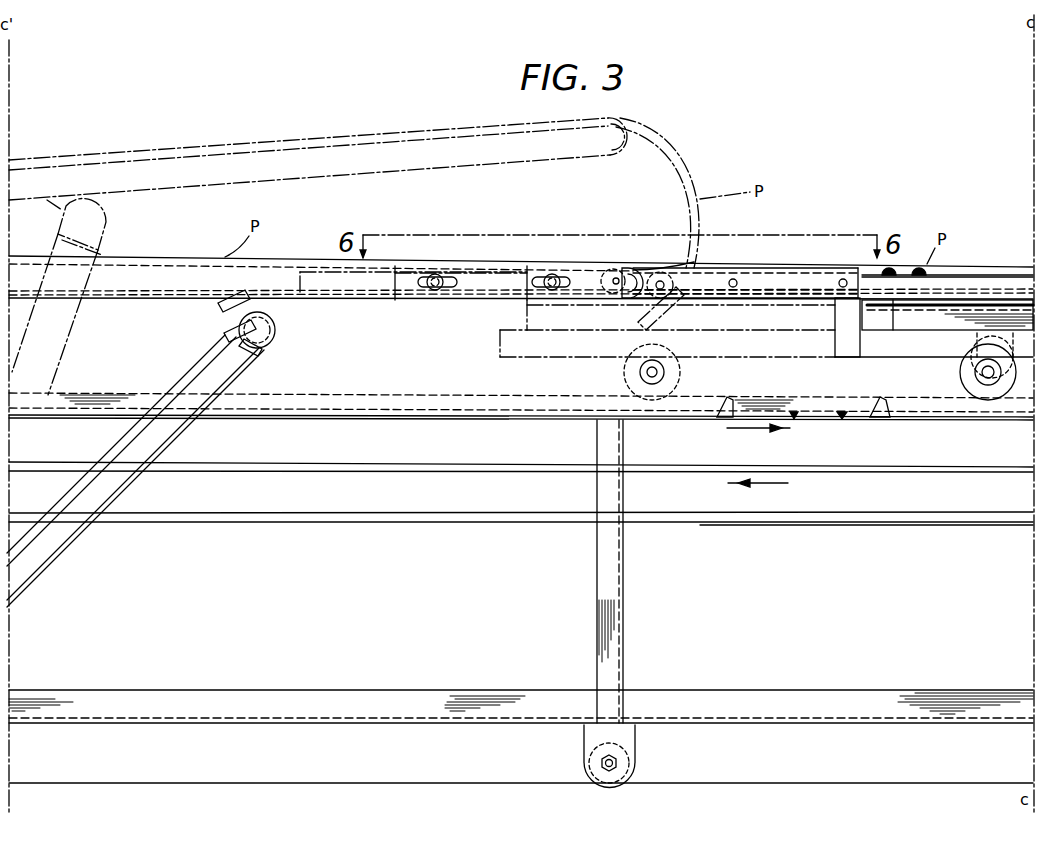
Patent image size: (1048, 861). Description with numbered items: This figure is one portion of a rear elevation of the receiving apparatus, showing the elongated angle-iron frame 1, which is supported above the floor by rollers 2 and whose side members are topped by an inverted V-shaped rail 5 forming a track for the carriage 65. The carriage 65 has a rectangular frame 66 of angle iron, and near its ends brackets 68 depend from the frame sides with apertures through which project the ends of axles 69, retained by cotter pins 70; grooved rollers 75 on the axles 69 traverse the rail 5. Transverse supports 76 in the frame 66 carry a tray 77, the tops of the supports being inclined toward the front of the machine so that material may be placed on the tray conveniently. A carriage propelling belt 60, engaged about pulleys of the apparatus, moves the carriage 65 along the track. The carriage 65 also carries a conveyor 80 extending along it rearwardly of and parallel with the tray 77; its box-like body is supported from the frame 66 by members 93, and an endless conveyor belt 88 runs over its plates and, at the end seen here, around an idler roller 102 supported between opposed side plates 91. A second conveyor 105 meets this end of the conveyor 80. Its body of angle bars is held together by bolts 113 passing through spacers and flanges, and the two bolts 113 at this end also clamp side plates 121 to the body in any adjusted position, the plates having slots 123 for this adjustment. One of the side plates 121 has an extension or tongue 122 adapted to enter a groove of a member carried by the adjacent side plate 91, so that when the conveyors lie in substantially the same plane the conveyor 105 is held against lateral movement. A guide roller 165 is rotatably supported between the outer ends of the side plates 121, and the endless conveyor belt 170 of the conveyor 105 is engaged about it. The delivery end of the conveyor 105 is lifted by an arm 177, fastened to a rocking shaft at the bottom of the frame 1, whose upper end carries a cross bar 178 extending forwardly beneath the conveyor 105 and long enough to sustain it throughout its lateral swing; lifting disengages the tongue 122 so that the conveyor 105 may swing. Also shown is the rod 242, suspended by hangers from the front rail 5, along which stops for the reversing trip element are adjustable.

The frame 1 is at (292, 720).
The rollers 2 is at (636, 775).
The rail 5 is at (507, 403).
The carriage propelling belt 60 is at (200, 462).
The carriage 65 is at (500, 355).
The rectangular frame 66 is at (843, 433).
The brackets 68 is at (682, 372).
The axles 69 is at (978, 352).
The cotter pins 70 is at (990, 400).
The grooved rollers 75 is at (624, 373).
The supports 76 is at (873, 317).
The tray 77 is at (935, 316).
The conveyor 80 is at (950, 283).
The endless conveyor belt 88 is at (743, 290).
The side plates 91 is at (790, 283).
The members 93 is at (840, 313).
The idler roller 102 is at (623, 308).
The second conveyor 105 is at (158, 303).
The bolts 113 is at (432, 274).
The side plates 121 is at (493, 285).
The extension or tongue 122 is at (640, 138).
The slots 123 is at (545, 277).
The guide roller 165 is at (614, 286).
The endless conveyor belt 170 is at (276, 318).
The arm 177 is at (47, 557).
The cross bar 178 is at (230, 308).
The rod 242 is at (440, 523).